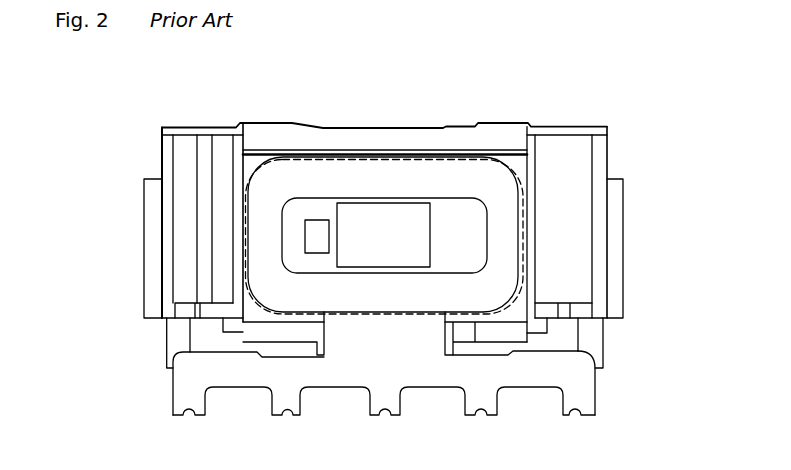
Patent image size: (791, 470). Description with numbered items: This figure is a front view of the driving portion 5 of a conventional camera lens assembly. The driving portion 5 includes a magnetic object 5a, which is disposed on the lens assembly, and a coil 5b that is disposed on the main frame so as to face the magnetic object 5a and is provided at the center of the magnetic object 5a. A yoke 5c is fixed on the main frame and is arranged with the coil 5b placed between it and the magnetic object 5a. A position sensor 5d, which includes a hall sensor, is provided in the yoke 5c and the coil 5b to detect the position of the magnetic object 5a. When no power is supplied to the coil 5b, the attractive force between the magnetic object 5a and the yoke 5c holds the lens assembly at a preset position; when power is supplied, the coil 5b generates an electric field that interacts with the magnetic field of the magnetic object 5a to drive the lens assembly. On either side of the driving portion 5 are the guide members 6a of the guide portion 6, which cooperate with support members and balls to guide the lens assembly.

The driving portion 5 is at (513, 63).
The magnetic object 5a is at (486, 160).
The coil 5b is at (430, 180).
The yoke 5c is at (263, 162).
The position sensor 5d is at (367, 218).
The guide portion 6 is at (150, 247).
The guide members 6a is at (168, 157).